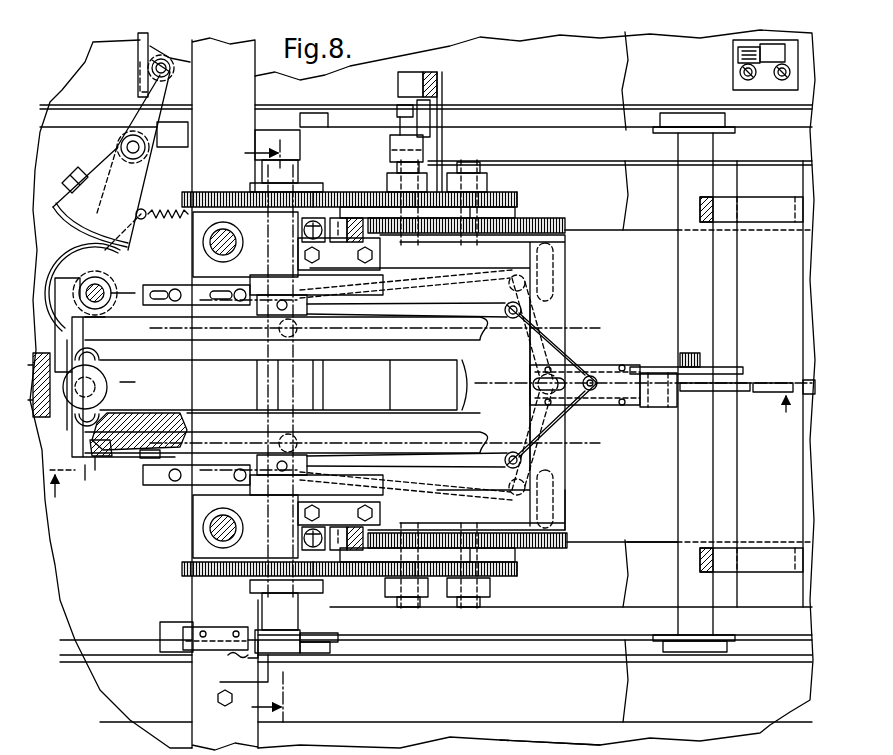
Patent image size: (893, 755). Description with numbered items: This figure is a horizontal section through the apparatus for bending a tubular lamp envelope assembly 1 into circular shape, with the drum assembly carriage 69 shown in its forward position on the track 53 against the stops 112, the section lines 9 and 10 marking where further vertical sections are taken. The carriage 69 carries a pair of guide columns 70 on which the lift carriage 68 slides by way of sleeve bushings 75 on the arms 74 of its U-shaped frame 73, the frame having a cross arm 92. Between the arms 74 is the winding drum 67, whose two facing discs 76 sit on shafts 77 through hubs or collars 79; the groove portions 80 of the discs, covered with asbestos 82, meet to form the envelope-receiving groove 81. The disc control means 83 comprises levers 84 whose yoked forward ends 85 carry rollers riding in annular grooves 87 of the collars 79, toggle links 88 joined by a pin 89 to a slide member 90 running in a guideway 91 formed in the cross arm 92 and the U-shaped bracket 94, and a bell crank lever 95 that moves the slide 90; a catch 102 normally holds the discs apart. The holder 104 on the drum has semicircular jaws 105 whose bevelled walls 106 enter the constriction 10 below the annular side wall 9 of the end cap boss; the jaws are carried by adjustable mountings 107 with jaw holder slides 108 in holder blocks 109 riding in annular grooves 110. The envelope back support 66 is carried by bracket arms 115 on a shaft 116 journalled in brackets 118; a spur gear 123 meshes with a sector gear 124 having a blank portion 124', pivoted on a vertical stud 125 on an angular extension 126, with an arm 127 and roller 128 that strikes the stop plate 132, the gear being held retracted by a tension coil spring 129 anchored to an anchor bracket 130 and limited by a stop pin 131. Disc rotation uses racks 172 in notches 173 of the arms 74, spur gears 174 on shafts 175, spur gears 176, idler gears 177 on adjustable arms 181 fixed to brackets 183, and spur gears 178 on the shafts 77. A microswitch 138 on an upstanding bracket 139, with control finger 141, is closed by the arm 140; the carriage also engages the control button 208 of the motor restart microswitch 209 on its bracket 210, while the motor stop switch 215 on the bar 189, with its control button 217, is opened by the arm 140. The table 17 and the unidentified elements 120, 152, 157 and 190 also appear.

The tubular electric lamp envelope assembly 1 is at (133, 377).
The annular side wall 9 is at (256, 431).
The constriction 10 is at (422, 454).
The table 17 is at (712, 730).
The track 53 is at (572, 110).
The envelope back support 66 is at (70, 405).
The winding drum 67 is at (180, 380).
The lift carriage 68 is at (580, 487).
The drum assembly carriage 69 is at (613, 545).
The guide columns 70 is at (212, 240).
The U-shaped frame 73 is at (570, 472).
The arms 74 is at (555, 262).
The sleeve bushings 75 is at (203, 250).
The facing discs 76 is at (478, 340).
The shafts 77 is at (300, 170).
The hubs or collars 79 is at (310, 286).
The annular groove portions 80 is at (170, 414).
The annular envelope-receiving groove 81 is at (461, 385).
The asbestos 82 is at (135, 418).
The disc control means 83 is at (586, 352).
The levers 84 is at (498, 328).
The yoked forward ends 85 is at (330, 302).
The annular grooves 87 is at (250, 315).
The toggle links 88 is at (560, 345).
The pin 89 is at (592, 392).
The slide member 90 is at (655, 395).
The guideway 91 is at (535, 380).
The cross arm 92 is at (560, 303).
The U-shaped bracket 94 is at (615, 408).
The bell crank lever 95 is at (725, 393).
The catch 102 is at (648, 366).
The holder 104 is at (70, 440).
The semicircular jaws 105 is at (100, 350).
The walls of the jaw openings 106 is at (92, 360).
The adjustable mountings 107 is at (86, 478).
The jaw holder slides 108 is at (92, 465).
The holder blocks 109 is at (150, 460).
The annular grooves 110 is at (180, 430).
The stops 112 is at (172, 135).
The bracket arms 115 is at (75, 293).
The shaft 116 is at (96, 284).
The brackets 118 is at (158, 278).
The plate 120 is at (40, 352).
The spur gear 123 is at (68, 248).
The sector gear 124 is at (83, 197).
The blank portion 124' is at (121, 228).
The vertical stud 125 is at (136, 140).
The angular extension 126 is at (112, 160).
The arm 127 is at (142, 96).
The roller 128 is at (174, 72).
The tension coil spring 129 is at (168, 210).
The anchor bracket 130 is at (443, 143).
The stop pin 131 is at (68, 180).
The stop plate 132 is at (138, 68).
The microswitch 138 is at (220, 630).
The upstanding bracket 139 is at (198, 688).
The arm 140 is at (217, 695).
The control finger 141 is at (248, 658).
The bearing 152 is at (302, 228).
The bracket 157 is at (755, 205).
The racks 172 is at (355, 218).
The notches 173 is at (339, 381).
The spur gears 174 is at (565, 226).
The shafts 175 is at (485, 182).
The spur gears 176 is at (517, 204).
The idler gears 177 is at (390, 190).
The spur gears 178 is at (213, 198).
The adjustable arms 181 is at (503, 214).
The brackets 183 is at (492, 235).
The bar 189 is at (428, 82).
The block 190 is at (390, 142).
The control button 208 is at (738, 55).
The motor restart microswitch 209 is at (750, 78).
The bracket 210 is at (740, 66).
The motor stop switch 215 is at (398, 86).
The control button 217 is at (400, 130).